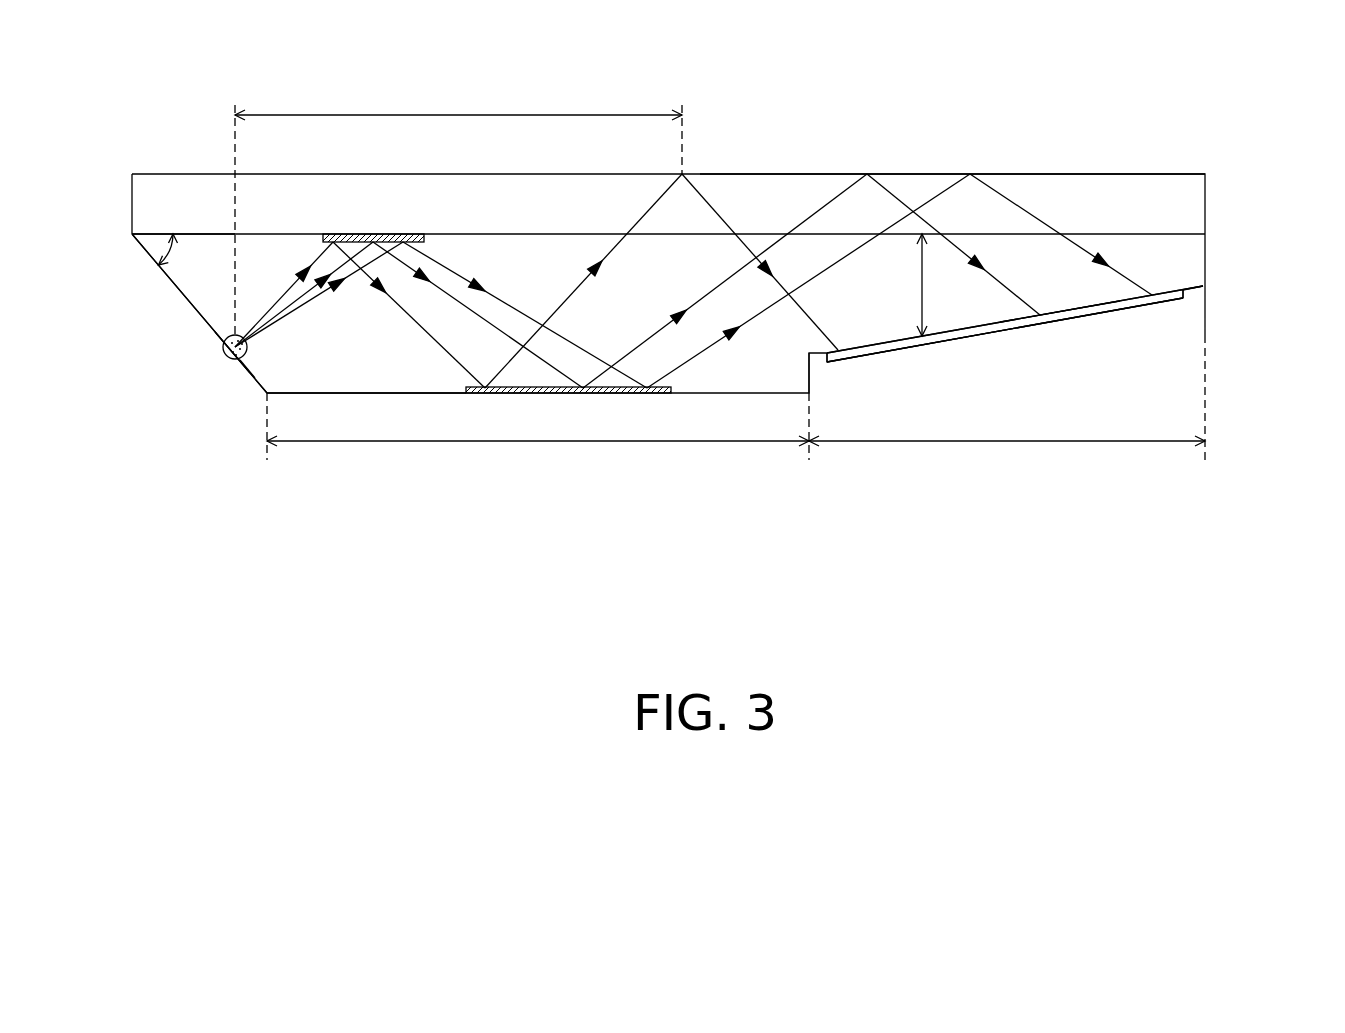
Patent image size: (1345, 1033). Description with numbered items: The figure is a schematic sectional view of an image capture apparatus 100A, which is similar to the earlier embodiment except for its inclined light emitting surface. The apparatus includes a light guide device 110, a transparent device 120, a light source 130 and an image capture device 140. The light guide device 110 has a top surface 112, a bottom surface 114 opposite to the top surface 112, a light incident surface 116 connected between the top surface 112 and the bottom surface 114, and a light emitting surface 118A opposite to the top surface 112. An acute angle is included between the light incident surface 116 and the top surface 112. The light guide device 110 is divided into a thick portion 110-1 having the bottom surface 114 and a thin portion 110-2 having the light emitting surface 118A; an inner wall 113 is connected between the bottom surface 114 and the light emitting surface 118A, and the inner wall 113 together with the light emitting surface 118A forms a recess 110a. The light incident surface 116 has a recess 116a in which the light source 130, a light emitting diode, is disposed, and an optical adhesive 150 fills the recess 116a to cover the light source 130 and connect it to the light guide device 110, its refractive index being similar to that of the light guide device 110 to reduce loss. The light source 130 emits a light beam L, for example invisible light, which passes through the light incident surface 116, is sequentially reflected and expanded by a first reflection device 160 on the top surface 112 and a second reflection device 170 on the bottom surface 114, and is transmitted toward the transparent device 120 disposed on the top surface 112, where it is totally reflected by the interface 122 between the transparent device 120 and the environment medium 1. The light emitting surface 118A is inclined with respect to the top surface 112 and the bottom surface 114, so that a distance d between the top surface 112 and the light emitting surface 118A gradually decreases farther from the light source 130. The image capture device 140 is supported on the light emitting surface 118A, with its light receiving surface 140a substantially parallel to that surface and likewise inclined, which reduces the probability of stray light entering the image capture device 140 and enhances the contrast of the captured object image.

The environment medium 1 is at (123, 112).
The image capture apparatus 100A is at (1330, 575).
The light guide device 110 is at (1196, 247).
The thick portion 110-1 is at (538, 439).
The thin portion 110-2 is at (1007, 410).
The recess 110a is at (938, 356).
The top surface 112 is at (163, 233).
The inner wall 113 is at (811, 373).
The bottom surface 114 is at (304, 395).
The light incident surface 116 is at (186, 298).
The recess 116a is at (226, 348).
The light emitting surface 118A is at (1063, 311).
The transparent device 120 is at (1185, 206).
The interface 122 is at (1166, 172).
The light source 130 is at (238, 358).
The image capture device 140 is at (1138, 302).
The light receiving surface 140a is at (1173, 290).
The optical adhesive 150 is at (247, 371).
The first reflection device 160 is at (368, 240).
The second reflection device 170 is at (557, 393).
The light beam L is at (813, 207).
The distance D is at (458, 210).
The distance d is at (931, 285).